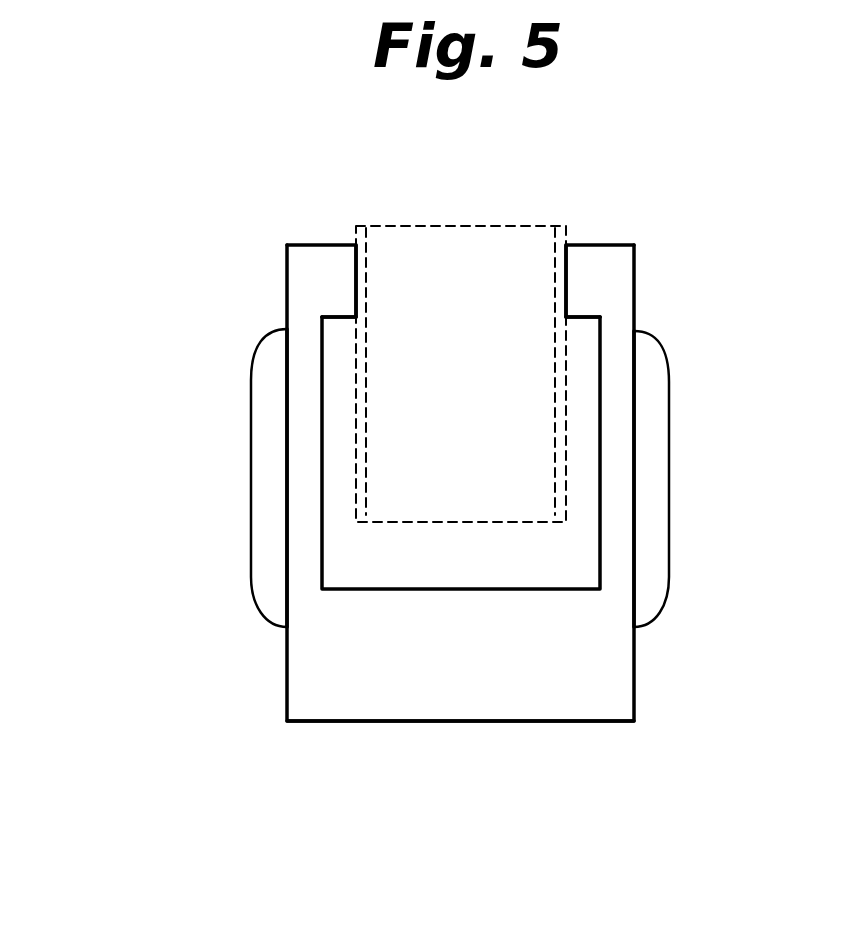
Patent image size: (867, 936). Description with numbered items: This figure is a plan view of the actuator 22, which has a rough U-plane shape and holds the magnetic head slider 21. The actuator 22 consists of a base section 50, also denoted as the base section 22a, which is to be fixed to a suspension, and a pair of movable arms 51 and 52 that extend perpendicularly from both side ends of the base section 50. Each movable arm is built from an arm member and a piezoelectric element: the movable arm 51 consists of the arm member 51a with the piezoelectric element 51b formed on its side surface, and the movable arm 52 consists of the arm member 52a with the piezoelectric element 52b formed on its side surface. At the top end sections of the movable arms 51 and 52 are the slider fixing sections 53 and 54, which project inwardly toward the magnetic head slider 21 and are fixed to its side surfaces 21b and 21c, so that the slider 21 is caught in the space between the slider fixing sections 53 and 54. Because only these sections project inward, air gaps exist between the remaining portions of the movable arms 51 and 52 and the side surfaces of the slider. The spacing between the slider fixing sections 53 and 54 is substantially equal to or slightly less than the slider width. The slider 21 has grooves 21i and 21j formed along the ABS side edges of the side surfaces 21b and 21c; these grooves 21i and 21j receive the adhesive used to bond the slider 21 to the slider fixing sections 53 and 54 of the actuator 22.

The magnetic head slider 21 is at (492, 226).
The side surface 21b is at (568, 293).
The side surface 21c is at (355, 290).
The groove 21i is at (568, 352).
The groove 21j is at (356, 360).
The actuator 22 is at (708, 238).
The base section 22a is at (469, 702).
The base section 50 is at (460, 753).
The movable arm 51 is at (719, 479).
The arm member 51a is at (608, 447).
The piezoelectric element 51b is at (648, 497).
The movable arm 52 is at (183, 478).
The arm member 52a is at (307, 445).
The piezoelectric element 52b is at (270, 500).
The slider fixing section 53 is at (580, 270).
The slider fixing section 54 is at (336, 272).